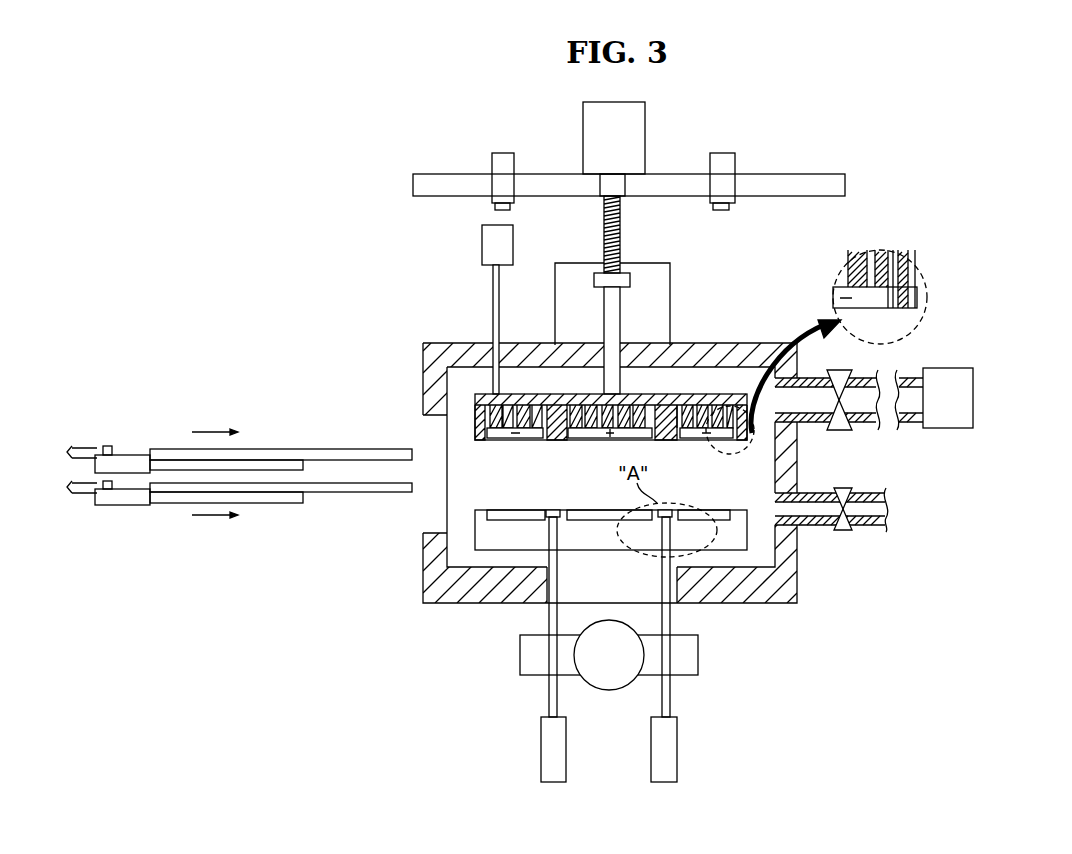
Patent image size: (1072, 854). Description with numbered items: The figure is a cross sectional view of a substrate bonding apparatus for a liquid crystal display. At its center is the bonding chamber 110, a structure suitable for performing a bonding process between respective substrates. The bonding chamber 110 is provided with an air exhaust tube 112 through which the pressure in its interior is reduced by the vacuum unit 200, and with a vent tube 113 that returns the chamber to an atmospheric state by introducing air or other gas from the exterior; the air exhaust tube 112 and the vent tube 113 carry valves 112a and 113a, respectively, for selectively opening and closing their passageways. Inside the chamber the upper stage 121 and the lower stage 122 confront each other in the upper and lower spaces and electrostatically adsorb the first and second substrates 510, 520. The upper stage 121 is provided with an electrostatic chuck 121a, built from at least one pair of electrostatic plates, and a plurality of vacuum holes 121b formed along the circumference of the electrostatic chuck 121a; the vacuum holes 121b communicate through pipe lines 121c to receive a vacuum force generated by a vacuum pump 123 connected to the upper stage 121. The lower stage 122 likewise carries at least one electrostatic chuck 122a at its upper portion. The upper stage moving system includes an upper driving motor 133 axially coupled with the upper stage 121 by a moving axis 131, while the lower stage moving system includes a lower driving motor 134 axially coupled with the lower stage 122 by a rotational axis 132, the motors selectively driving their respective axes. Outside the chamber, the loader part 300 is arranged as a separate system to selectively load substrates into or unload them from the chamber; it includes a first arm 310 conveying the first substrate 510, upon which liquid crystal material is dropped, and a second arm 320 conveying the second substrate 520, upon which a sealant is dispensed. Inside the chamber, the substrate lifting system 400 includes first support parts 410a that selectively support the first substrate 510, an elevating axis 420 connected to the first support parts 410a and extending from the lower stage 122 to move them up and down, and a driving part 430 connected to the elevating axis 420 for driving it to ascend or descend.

The bonding chamber 110 is at (425, 343).
The air exhaust tube 112 is at (913, 422).
The valve 112a is at (840, 430).
The vent tube 113 is at (885, 509).
The valve 113a is at (845, 530).
The upper stage 121 is at (722, 390).
The electrostatic chuck 121a is at (883, 298).
The vacuum holes 121b is at (903, 268).
The pipe lines 121c is at (677, 393).
The lower stage 122 is at (733, 537).
The electrostatic chuck 122a is at (740, 516).
The vacuum pump 123 is at (482, 238).
The moving axis 131 is at (613, 307).
The rotational axis 132 is at (698, 655).
The upper driving motor 133 is at (645, 128).
The lower driving motor 134 is at (612, 678).
The vacuum unit 200 is at (973, 403).
The loader part 300 is at (225, 459).
The first arm 310 is at (147, 455).
The second arm 320 is at (127, 502).
The substrate lifting system 400 is at (529, 646).
The first support parts 410a is at (548, 518).
The elevating axis 420 is at (555, 685).
The driving part 430 is at (550, 742).
The first substrate 510 is at (333, 452).
The second substrate 520 is at (332, 490).